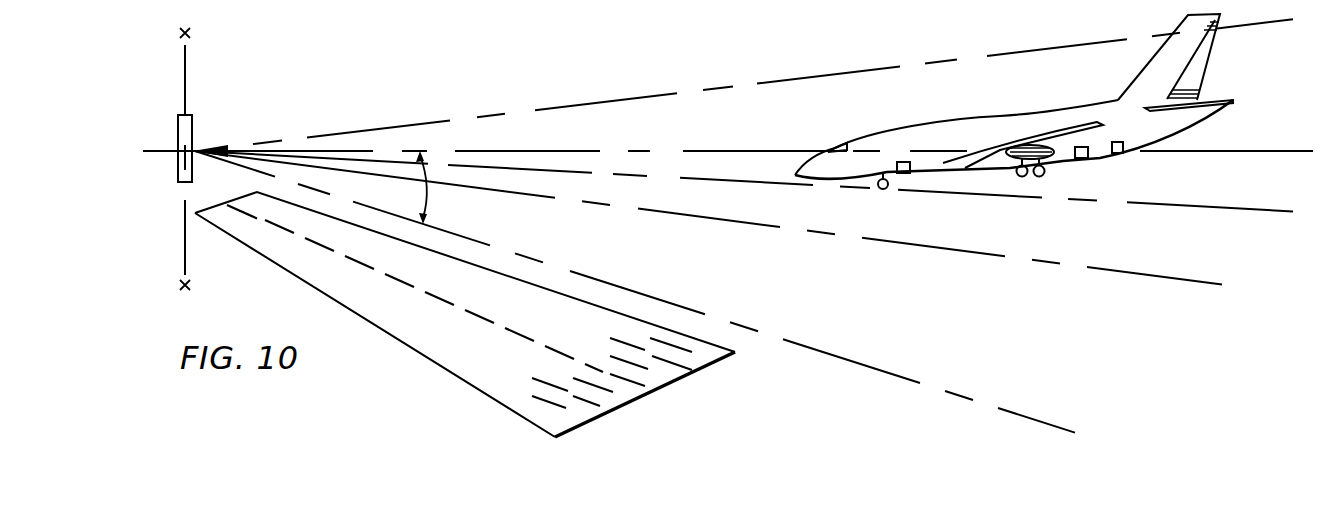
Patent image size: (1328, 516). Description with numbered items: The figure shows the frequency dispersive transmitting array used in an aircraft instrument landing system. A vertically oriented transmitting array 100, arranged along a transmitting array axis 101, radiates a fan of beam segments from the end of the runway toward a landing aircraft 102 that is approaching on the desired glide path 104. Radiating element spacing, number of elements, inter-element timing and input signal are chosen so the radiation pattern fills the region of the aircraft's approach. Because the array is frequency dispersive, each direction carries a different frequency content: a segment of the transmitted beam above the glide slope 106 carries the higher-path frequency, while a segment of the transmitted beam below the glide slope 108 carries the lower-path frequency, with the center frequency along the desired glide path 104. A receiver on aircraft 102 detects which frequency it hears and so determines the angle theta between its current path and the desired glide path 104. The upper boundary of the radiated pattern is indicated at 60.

The upper beam boundary 60 is at (773, 72).
The transmitting array 100 is at (178, 140).
The transmitting array axis 101 is at (185, 65).
The landing aircraft 102 is at (1100, 160).
The glide path 104 is at (635, 175).
The higher glide path 106 is at (527, 140).
The lower glide path 108 is at (943, 250).